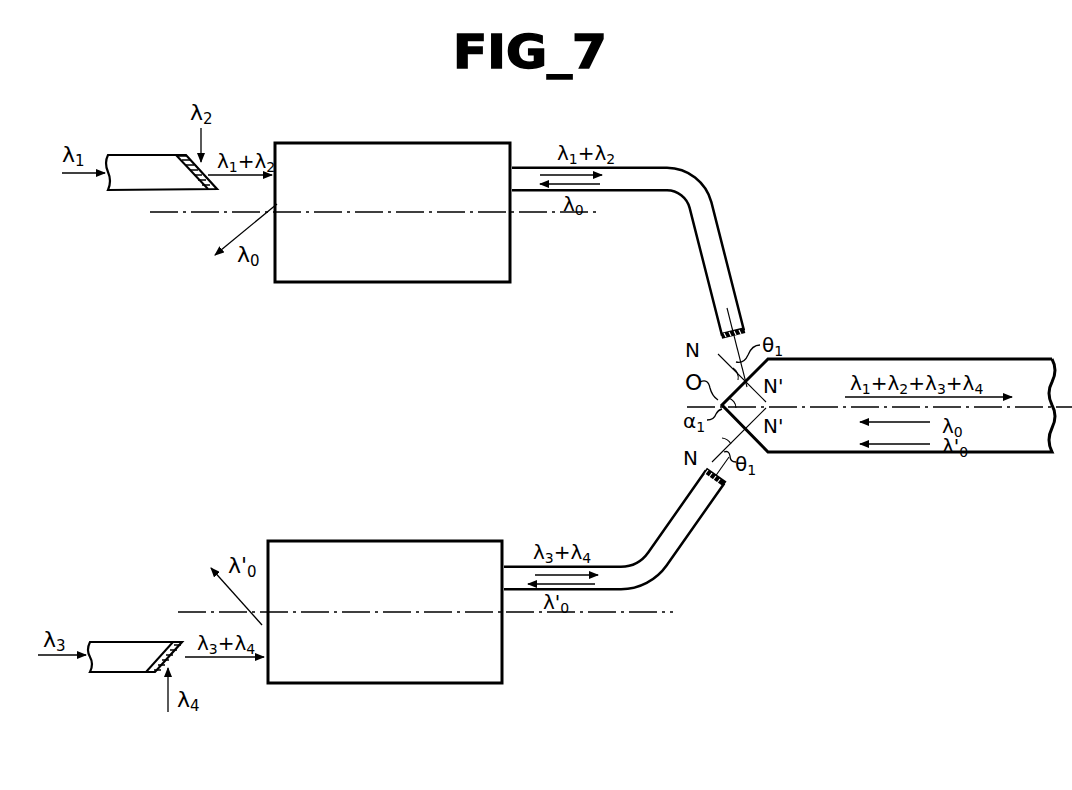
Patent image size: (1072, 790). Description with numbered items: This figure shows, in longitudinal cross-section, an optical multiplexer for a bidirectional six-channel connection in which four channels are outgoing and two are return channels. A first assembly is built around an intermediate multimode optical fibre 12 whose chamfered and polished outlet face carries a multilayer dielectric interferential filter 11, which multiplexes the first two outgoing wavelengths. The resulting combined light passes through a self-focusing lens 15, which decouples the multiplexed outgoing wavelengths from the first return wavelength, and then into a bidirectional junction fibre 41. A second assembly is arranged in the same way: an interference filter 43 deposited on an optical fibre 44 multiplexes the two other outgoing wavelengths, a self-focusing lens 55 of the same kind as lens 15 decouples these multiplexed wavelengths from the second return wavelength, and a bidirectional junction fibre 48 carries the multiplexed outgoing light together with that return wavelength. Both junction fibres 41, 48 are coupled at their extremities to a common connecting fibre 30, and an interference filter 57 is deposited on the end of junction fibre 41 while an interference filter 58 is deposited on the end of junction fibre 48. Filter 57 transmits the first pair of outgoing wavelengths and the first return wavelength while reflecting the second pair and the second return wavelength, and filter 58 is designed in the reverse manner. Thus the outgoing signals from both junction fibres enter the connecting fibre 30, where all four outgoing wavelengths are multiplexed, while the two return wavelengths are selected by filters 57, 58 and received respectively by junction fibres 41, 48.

The intermediate multimode optical fibre 12 is at (148, 155).
The multilayer dielectric interferential filter 11 is at (215, 189).
The self-focusing lens 15 is at (340, 283).
The bidirectional junction fibre 41 is at (689, 172).
The interference filter 57 is at (742, 327).
The connecting fibre 30 is at (920, 359).
The self-focusing lens 55 is at (370, 541).
The optical fibre 44 is at (135, 642).
The interference filter 43 is at (170, 663).
The bidirectional junction fibre 48 is at (680, 548).
The interference filter 58 is at (719, 484).